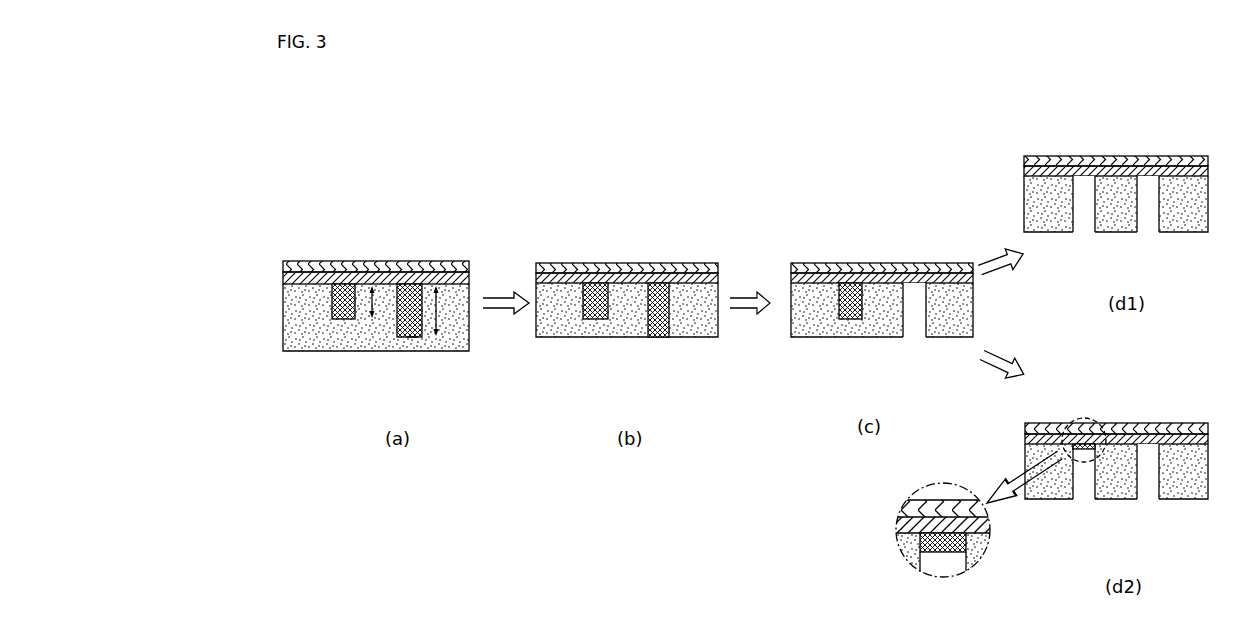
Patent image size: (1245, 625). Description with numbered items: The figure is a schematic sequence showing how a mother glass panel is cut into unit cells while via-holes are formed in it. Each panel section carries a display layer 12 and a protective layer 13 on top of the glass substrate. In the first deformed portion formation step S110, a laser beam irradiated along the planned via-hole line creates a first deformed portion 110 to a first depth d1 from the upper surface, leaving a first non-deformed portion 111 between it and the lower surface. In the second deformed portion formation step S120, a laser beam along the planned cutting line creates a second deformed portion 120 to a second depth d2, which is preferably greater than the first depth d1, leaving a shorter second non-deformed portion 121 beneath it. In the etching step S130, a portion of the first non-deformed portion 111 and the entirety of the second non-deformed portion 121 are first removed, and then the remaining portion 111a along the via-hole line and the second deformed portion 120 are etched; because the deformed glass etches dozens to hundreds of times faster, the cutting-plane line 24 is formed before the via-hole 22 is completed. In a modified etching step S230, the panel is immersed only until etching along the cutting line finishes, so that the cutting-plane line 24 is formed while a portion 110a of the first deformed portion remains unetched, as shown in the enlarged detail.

The protective layer 13 is at (312, 266).
The display layer 12 is at (330, 278).
The first deformed portion 110 is at (341, 286).
The second deformed portion 120 is at (412, 286).
The first non-deformed portion 111 is at (349, 323).
The second non-deformed portion 121 is at (413, 341).
The remaining portion of the first non-deformed portion 111a is at (602, 322).
The portion of the first deformed portion remaining unetched 110a is at (947, 536).
The cutting-plane line 24 is at (922, 310).
The via-hole 22 is at (1091, 202).
The first depth d1 is at (376, 288).
The second depth d2 is at (440, 290).
The first deformed portion formation step S110 is at (533, 165).
The second deformed portion formation step S120 is at (556, 156).
The etching step S130 is at (724, 226).
The etching step S230 is at (1038, 546).